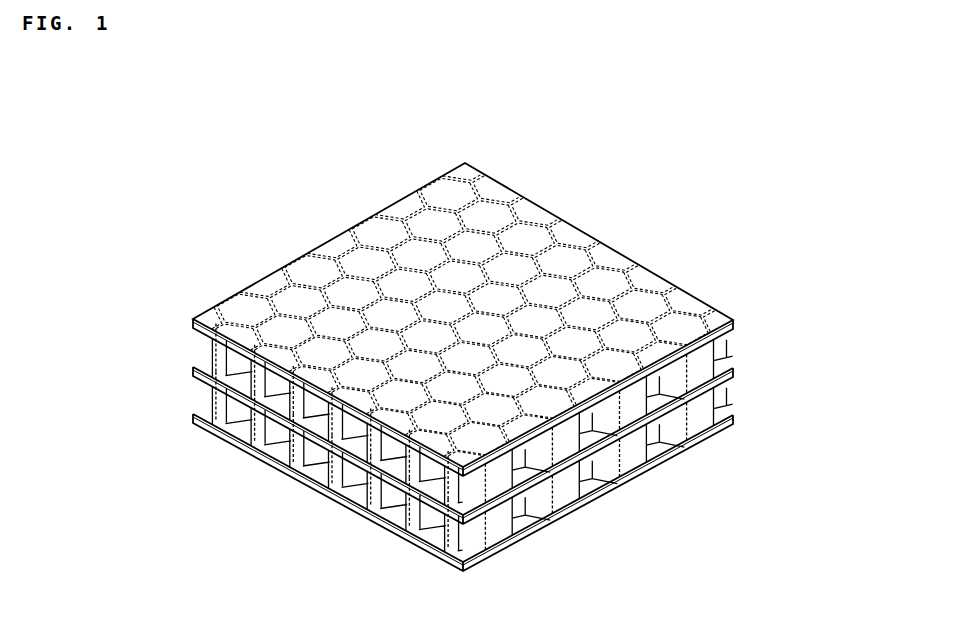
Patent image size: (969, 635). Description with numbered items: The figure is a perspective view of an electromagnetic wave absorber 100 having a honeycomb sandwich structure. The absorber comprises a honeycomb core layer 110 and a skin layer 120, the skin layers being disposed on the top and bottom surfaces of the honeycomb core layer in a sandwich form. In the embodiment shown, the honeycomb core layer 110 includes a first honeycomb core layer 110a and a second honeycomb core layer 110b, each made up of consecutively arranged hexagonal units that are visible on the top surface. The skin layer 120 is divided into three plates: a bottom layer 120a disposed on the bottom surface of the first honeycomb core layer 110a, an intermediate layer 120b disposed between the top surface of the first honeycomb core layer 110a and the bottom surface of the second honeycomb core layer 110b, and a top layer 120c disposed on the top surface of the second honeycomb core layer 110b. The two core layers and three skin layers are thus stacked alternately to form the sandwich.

The electromagnetic wave absorber 100 is at (347, 156).
The honeycomb core layer 110 is at (90, 332).
The first honeycomb core layer 110a is at (208, 398).
The second honeycomb core layer 110b is at (208, 349).
The skin layer 120 is at (842, 328).
The bottom layer 120a is at (735, 416).
The intermediate layer 120b is at (735, 369).
The top layer 120c is at (735, 321).